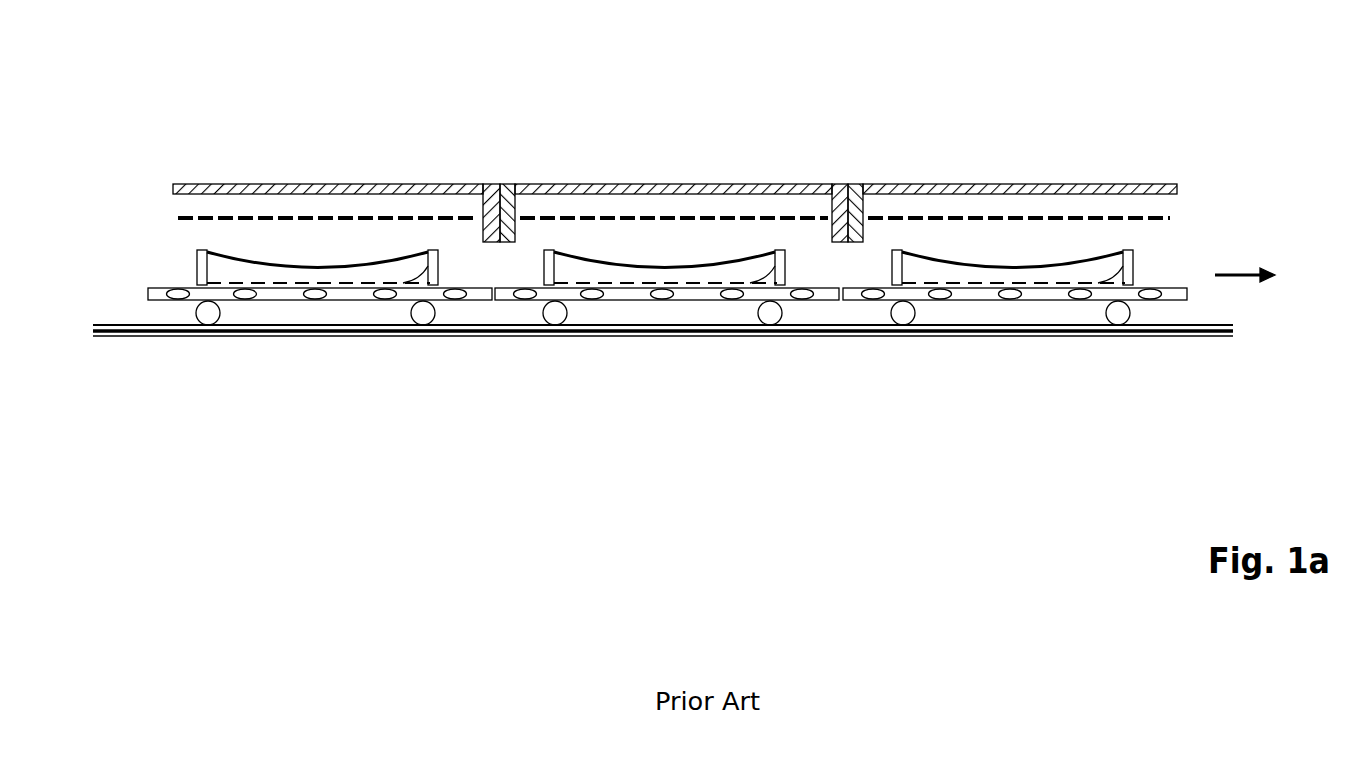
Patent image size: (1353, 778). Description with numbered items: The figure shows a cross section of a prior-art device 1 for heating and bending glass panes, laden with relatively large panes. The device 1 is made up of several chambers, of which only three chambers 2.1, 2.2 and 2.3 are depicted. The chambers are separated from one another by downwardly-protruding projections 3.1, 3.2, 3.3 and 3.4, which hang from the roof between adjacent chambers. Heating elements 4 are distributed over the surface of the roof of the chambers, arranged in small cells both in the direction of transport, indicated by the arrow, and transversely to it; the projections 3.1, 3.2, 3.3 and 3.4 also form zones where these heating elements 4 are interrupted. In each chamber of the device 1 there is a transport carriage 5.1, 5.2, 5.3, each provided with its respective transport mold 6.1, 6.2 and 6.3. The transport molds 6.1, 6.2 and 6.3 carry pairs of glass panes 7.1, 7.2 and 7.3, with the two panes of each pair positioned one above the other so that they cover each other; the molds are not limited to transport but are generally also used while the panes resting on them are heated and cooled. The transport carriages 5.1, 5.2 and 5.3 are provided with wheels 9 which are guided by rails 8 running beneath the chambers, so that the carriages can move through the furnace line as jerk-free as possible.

The device for heating and bending glass panes 1 is at (643, 155).
The chamber 2.1 is at (290, 183).
The chamber 2.2 is at (605, 183).
The chamber 2.3 is at (1015, 183).
The projection 3.1 is at (487, 183).
The projection 3.2 is at (508, 186).
The projection 3.3 is at (842, 184).
The projection 3.4 is at (860, 186).
The heating elements 4 is at (220, 222).
The transport carriage 5.1 is at (343, 300).
The transport carriage 5.2 is at (692, 300).
The transport carriage 5.3 is at (1042, 300).
The transport mold 6.1 is at (395, 300).
The transport mold 6.2 is at (742, 300).
The transport mold 6.3 is at (1092, 300).
The pair of glass panes 7.1 is at (275, 270).
The pair of glass panes 7.2 is at (620, 270).
The pair of glass panes 7.3 is at (970, 270).
The rails 8 is at (142, 325).
The wheels 9 is at (207, 318).